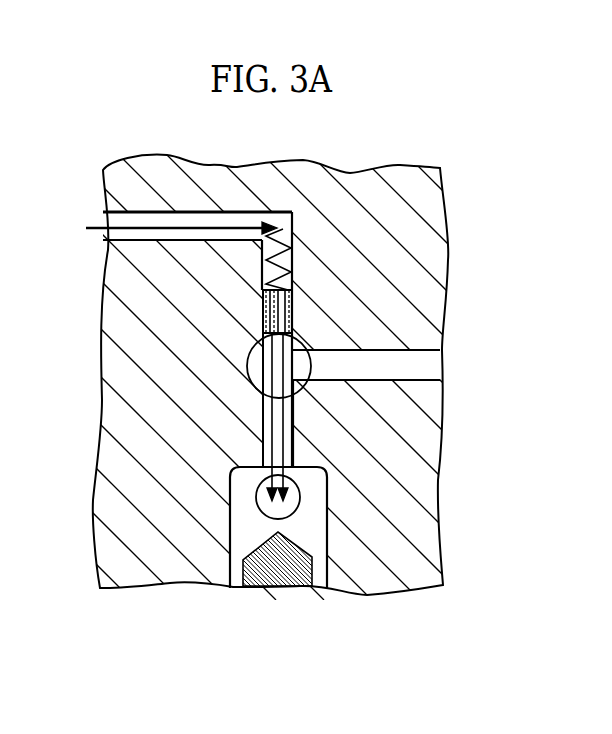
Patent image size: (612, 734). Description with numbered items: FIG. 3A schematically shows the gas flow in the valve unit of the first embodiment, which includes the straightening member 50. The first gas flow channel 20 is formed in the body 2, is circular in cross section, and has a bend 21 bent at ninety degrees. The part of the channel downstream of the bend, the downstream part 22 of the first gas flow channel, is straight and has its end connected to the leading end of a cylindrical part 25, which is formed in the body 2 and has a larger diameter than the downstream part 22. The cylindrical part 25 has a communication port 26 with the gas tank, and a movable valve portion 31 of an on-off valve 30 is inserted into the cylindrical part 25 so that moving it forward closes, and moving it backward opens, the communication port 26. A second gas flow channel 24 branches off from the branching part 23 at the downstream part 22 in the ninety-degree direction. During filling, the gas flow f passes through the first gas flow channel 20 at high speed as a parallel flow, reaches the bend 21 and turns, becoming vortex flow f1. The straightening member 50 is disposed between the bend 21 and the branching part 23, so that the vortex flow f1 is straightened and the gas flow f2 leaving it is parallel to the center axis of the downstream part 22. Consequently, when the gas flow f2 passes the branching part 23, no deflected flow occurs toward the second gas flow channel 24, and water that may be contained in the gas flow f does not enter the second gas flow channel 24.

The body 2 is at (432, 240).
The first gas flow channel 20 is at (181, 208).
The bend 21 is at (291, 212).
The straightening member 50 is at (263, 300).
The downstream part of the first gas flow channel 22 is at (292, 433).
The branching part 23 is at (294, 391).
The second gas flow channel 24 is at (437, 380).
The communication port 26 is at (258, 512).
The cylindrical part 25 is at (323, 562).
The on-off valve 30 is at (279, 583).
The movable valve portion 31 is at (263, 587).
The gas flow f is at (90, 226).
The vortex flow f1 is at (262, 260).
The gas flow after passing through the straightening member f2 is at (262, 449).